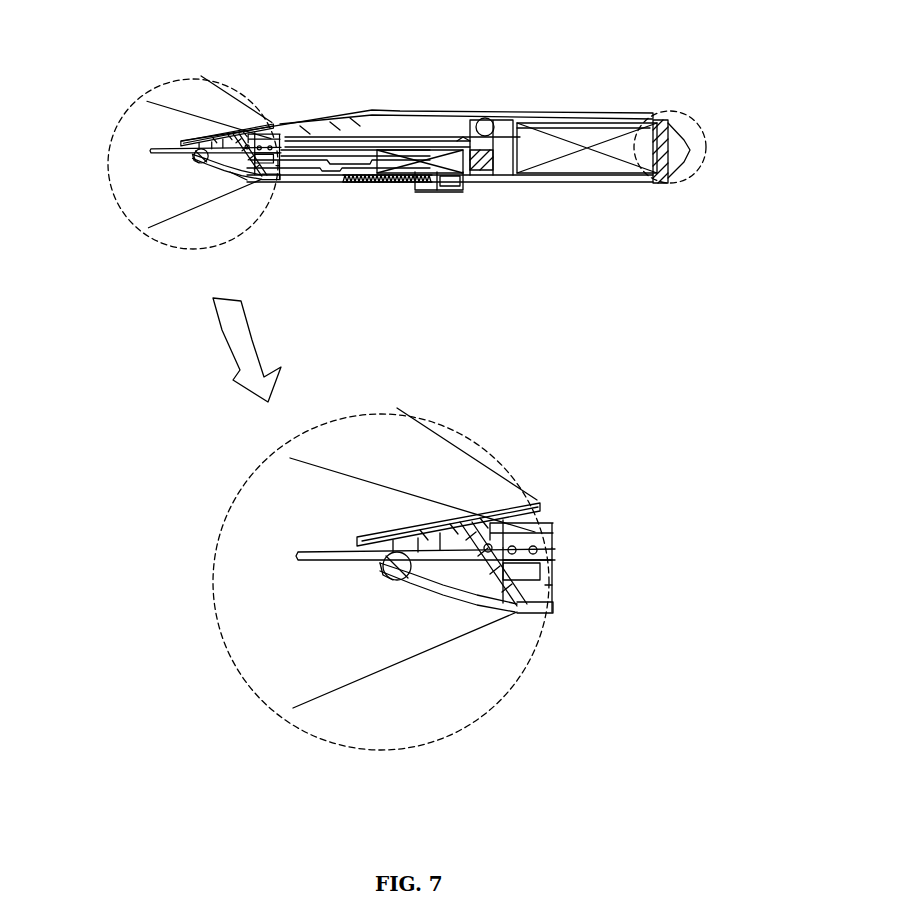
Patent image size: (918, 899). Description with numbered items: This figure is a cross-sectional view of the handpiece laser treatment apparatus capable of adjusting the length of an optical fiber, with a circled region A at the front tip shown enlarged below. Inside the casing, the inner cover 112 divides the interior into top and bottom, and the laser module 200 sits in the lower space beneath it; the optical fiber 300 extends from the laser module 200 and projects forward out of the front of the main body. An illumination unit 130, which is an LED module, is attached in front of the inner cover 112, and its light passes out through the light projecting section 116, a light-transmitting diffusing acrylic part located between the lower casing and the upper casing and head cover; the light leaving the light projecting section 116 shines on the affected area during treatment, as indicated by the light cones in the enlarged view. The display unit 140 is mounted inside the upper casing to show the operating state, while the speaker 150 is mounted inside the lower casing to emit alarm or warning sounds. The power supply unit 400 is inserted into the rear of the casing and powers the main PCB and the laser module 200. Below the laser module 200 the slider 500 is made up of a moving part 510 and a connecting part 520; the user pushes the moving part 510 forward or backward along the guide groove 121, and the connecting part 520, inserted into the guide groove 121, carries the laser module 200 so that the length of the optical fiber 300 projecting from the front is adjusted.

The detail region A is at (684, 100).
The inner cover 112 is at (538, 513).
The light projecting section 116 is at (461, 507).
The guide groove 121 is at (393, 190).
The illumination unit 130 is at (495, 515).
The display unit 140 is at (430, 113).
The speaker 150 is at (483, 173).
The laser module 200 is at (363, 190).
The optical fiber 300 is at (308, 547).
The power supply unit 400 is at (580, 113).
The slider 500 is at (490, 253).
The moving part 510 is at (427, 197).
The connecting part 520 is at (450, 187).